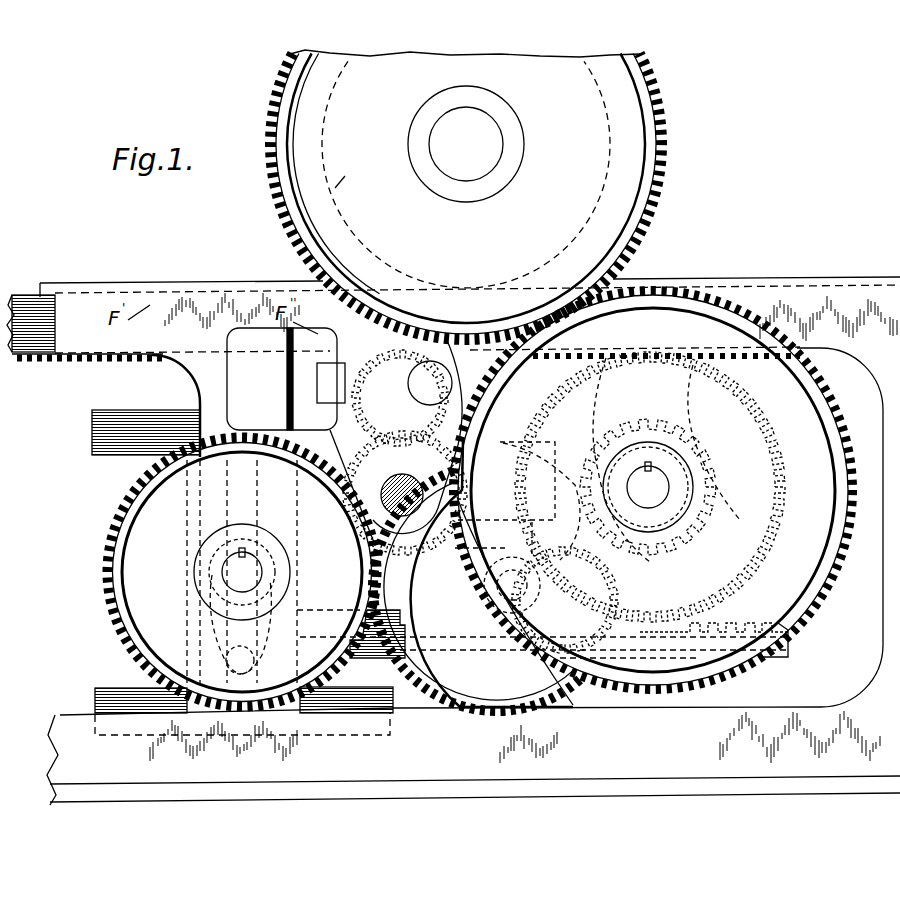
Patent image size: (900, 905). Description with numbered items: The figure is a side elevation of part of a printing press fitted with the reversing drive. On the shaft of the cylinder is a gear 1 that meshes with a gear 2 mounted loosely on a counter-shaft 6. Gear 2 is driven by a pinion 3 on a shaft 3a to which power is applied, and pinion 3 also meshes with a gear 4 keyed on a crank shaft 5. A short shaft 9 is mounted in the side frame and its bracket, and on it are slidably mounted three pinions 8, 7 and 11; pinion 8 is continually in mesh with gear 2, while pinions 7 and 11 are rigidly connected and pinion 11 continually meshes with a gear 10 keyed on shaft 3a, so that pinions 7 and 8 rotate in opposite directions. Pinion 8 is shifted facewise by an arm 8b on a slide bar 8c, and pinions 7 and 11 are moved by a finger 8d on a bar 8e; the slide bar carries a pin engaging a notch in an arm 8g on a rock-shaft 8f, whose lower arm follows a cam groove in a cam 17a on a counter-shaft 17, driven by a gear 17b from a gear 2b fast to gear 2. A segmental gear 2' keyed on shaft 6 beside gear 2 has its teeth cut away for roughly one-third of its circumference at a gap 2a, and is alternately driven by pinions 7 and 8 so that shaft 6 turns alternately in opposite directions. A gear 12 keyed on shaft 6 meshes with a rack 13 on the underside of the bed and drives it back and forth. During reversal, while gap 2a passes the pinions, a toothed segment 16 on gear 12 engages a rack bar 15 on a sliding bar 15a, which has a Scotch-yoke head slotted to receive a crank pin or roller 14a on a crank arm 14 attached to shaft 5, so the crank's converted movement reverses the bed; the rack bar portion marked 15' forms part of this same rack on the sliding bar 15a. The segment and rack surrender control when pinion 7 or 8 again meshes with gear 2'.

The gear 1 is at (272, 105).
The gear 2 is at (653, 471).
The gap 2a is at (792, 352).
The segmental gear 2' is at (847, 390).
The gear 2b is at (648, 470).
The pinion 3 is at (407, 553).
The shaft 3a is at (388, 509).
The gear 4 is at (107, 603).
The crank shaft 5 is at (256, 560).
The counter-shaft 6 is at (668, 487).
The pinion 7 is at (496, 345).
The pinion 8 is at (433, 345).
The arm 8b is at (505, 499).
The bar 8c is at (317, 373).
The finger 8d is at (393, 337).
The bar 8e is at (330, 408).
The rock-shaft 8f is at (549, 547).
The arm 8g is at (496, 427).
The short shaft 9 is at (430, 383).
The gear 10 is at (350, 505).
The pinion 11 is at (462, 348).
The gear 12 is at (644, 487).
The rack 13 is at (57, 362).
The crank arm 14 is at (207, 625).
The crank pin or roller 14a is at (233, 665).
The rack bar 15 is at (715, 620).
The rack bar 15' is at (630, 624).
The sliding bar 15a is at (374, 647).
The toothed segment 16 is at (613, 573).
The counter-shaft 17 is at (480, 612).
The cam 17a is at (492, 573).
The gear 17b is at (573, 708).